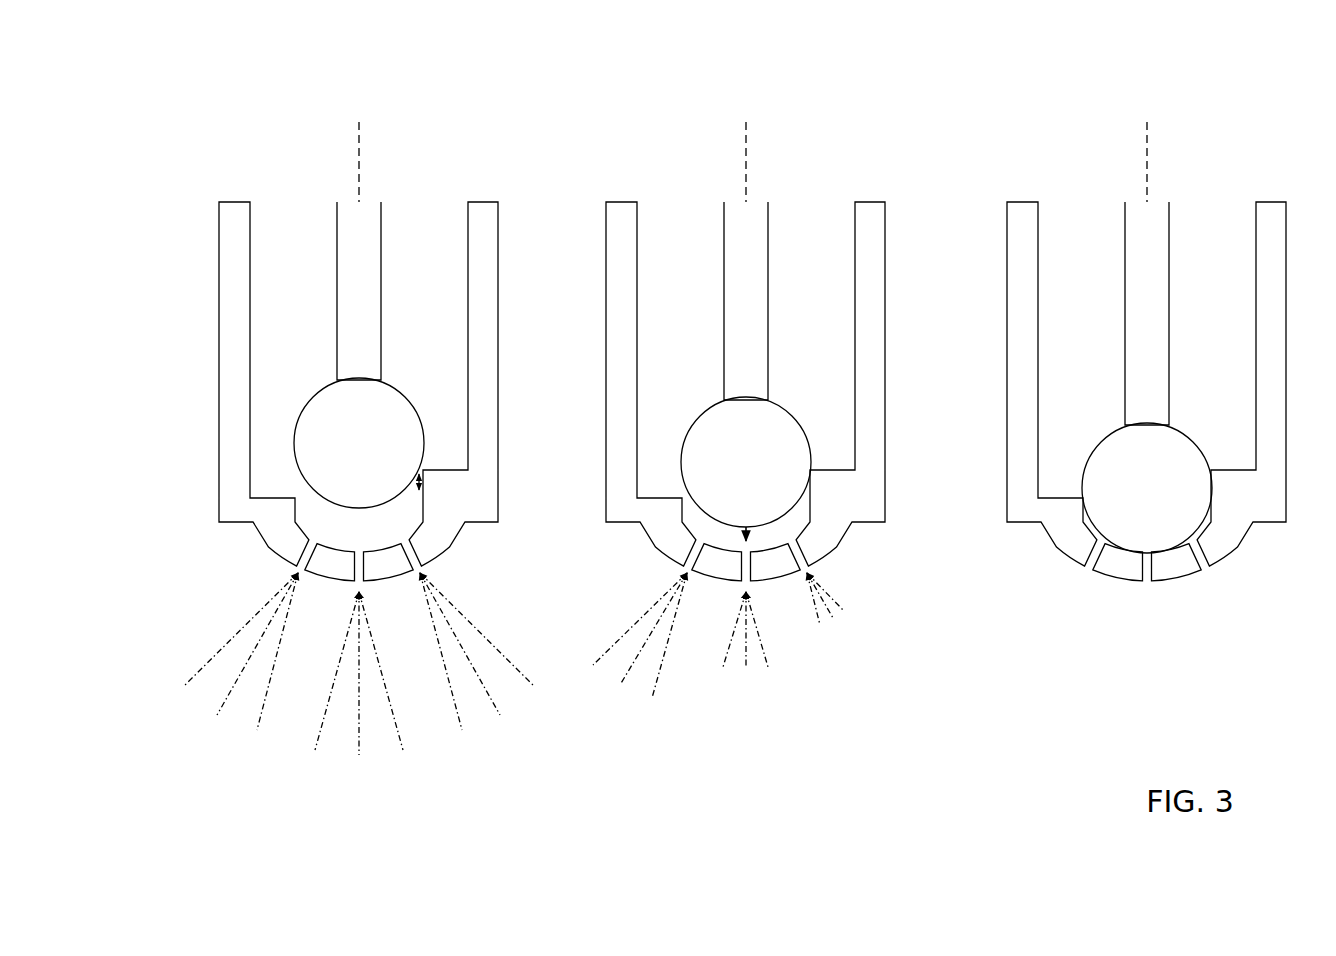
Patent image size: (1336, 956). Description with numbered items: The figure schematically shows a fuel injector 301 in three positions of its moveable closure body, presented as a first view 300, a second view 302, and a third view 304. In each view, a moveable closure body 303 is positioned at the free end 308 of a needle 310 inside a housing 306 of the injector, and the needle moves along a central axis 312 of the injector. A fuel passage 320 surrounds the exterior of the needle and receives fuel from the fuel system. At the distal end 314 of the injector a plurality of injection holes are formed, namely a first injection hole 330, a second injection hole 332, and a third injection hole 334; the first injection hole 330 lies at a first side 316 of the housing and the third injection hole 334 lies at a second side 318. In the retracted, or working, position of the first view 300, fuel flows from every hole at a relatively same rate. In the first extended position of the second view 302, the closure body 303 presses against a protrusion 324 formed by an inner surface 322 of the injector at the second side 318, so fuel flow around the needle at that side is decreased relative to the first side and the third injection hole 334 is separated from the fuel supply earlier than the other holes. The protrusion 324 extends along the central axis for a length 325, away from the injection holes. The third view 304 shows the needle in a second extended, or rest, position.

The first view 300 is at (199, 163).
The fuel injector 301 is at (472, 559).
The second view 302 is at (586, 163).
The moveable closure body 303 is at (398, 441).
The third view 304 is at (980, 163).
The housing 306 is at (726, 384).
The end 308 is at (358, 514).
The needle 310 is at (373, 290).
The central axis 312 is at (359, 165).
The distal end 314 is at (338, 604).
The first side 316 is at (211, 445).
The second side 318 is at (504, 446).
The fuel passage 320 is at (288, 263).
The inner surface 322 is at (468, 330).
The protrusion 324 is at (440, 480).
The length 325 is at (422, 484).
The first injection hole 330 is at (305, 560).
The second injection hole 332 is at (362, 567).
The third injection hole 334 is at (414, 562).